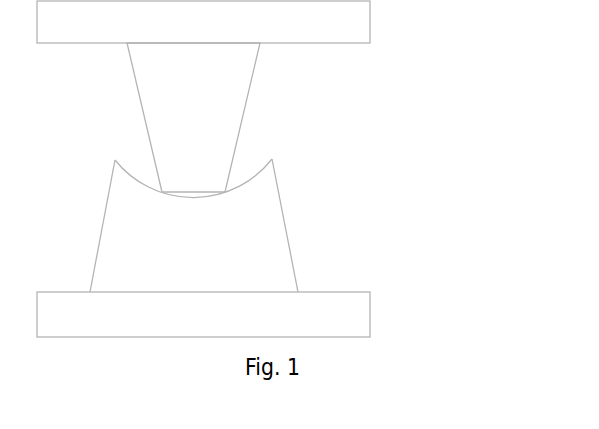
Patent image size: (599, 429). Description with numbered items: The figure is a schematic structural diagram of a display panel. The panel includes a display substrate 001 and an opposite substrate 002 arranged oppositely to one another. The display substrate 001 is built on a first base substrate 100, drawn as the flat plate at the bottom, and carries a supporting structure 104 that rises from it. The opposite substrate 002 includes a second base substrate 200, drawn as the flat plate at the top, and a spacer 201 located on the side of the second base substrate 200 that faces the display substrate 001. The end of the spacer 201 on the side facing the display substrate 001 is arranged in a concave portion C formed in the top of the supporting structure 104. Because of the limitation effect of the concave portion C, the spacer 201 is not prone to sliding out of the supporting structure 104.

The second base substrate 200 is at (370, 18).
The spacer 201 is at (248, 98).
The opposite substrate 002 is at (262, 96).
The supporting structure 104 is at (248, 205).
The concave portion C is at (234, 158).
The first base substrate 100 is at (370, 313).
The display substrate 001 is at (267, 228).